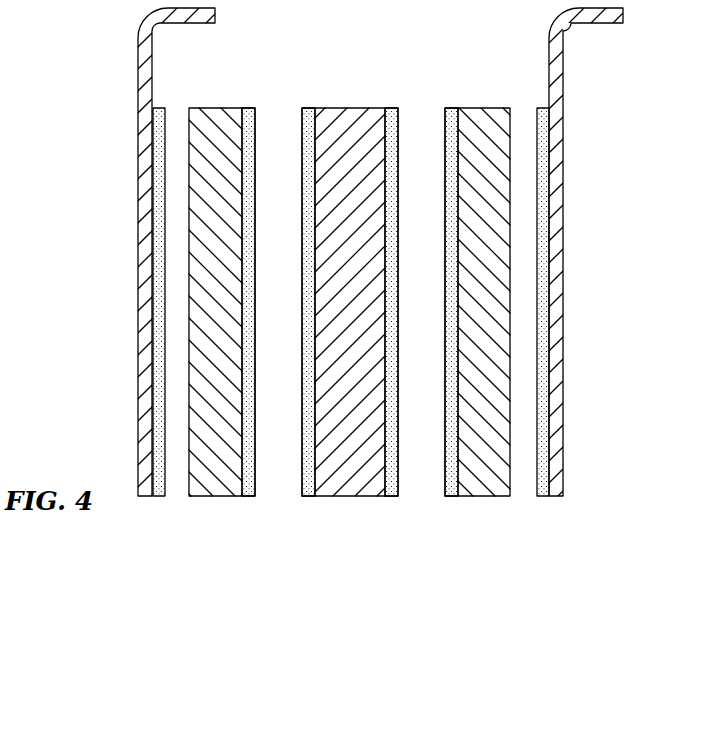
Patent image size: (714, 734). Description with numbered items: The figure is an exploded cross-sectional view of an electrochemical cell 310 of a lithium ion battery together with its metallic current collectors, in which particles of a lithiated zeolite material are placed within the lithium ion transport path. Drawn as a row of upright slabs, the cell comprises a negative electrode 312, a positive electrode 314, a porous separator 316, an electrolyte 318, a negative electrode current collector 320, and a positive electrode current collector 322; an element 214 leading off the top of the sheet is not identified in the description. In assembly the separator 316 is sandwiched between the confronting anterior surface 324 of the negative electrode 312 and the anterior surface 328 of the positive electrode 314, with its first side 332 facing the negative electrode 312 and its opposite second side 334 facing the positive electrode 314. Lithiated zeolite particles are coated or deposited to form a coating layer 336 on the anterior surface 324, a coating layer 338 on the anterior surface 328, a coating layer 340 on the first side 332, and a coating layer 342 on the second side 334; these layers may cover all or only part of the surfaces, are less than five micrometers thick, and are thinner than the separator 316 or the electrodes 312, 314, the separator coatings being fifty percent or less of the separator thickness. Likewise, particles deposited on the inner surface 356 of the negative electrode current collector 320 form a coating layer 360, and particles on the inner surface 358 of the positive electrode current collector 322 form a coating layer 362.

The housing / case wall 214 is at (76, 0).
The electrochemical cell 310 is at (349, 298).
The negative electrode 312 is at (197, 497).
The positive electrode 314 is at (494, 497).
The porous separator 316 is at (337, 109).
The electrolyte 318 is at (360, 130).
The negative electrode current collector 320 is at (139, 216).
The positive electrode current collector 322 is at (563, 218).
The anterior surface of the negative electrode 324 is at (248, 323).
The anterior surface of the positive electrode 328 is at (455, 328).
The first side of the separator 332 is at (316, 328).
The second side of the separator 334 is at (386, 368).
The coating layer 336 is at (254, 483).
The coating layer 338 is at (445, 483).
The coating layer 340 is at (303, 114).
The coating layer 342 is at (399, 114).
The inner surface of the negative electrode current collector 356 is at (150, 262).
The inner surface of the positive electrode current collector 358 is at (552, 269).
The coating layer 360 is at (157, 108).
The coating layer 362 is at (545, 107).